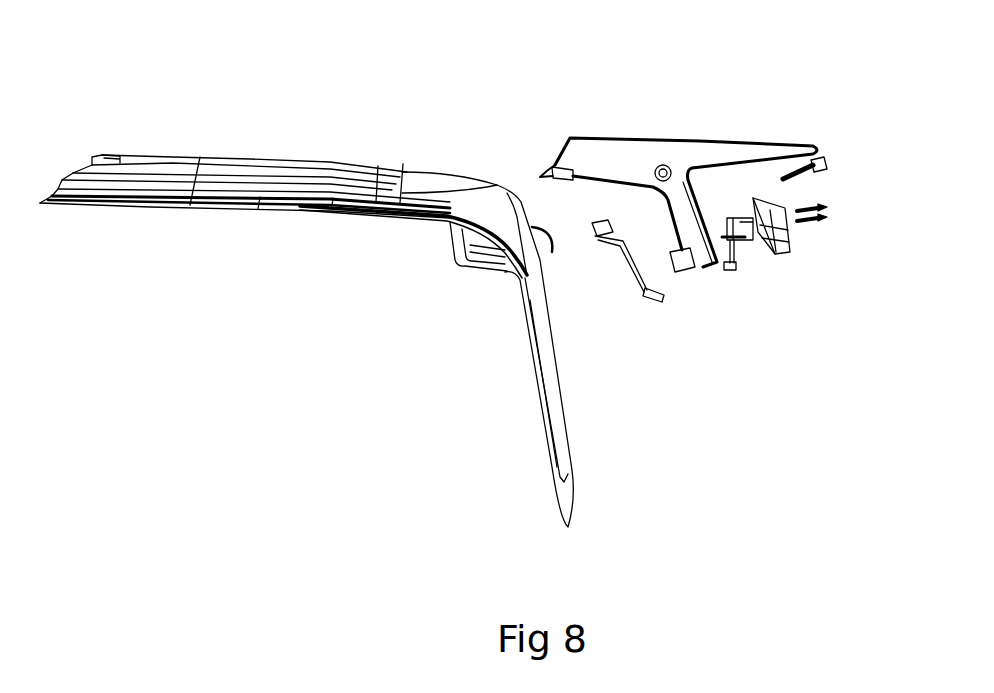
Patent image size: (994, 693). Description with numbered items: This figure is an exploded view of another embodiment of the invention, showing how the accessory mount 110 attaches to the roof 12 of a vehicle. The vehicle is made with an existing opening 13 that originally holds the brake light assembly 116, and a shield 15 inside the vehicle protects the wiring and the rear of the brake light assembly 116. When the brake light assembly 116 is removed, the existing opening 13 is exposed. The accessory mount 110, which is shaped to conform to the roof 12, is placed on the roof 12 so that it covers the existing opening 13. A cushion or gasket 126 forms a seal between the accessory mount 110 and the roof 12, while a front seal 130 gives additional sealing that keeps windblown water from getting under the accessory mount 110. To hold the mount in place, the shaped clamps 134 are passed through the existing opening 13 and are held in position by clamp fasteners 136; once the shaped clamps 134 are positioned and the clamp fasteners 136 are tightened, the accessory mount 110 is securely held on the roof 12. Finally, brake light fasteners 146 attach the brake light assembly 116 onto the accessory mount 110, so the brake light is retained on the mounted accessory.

The roof 12 is at (440, 170).
The existing opening 13 is at (555, 253).
The shield 15 is at (452, 248).
The accessory mount 110 is at (707, 177).
The brake light assembly 116 is at (798, 245).
The cushion or gasket 126 is at (589, 185).
The front seal 130 is at (553, 168).
The shaped clamps 134 is at (630, 268).
The clamp fasteners 136 is at (810, 178).
The brake light fasteners 146 is at (832, 210).